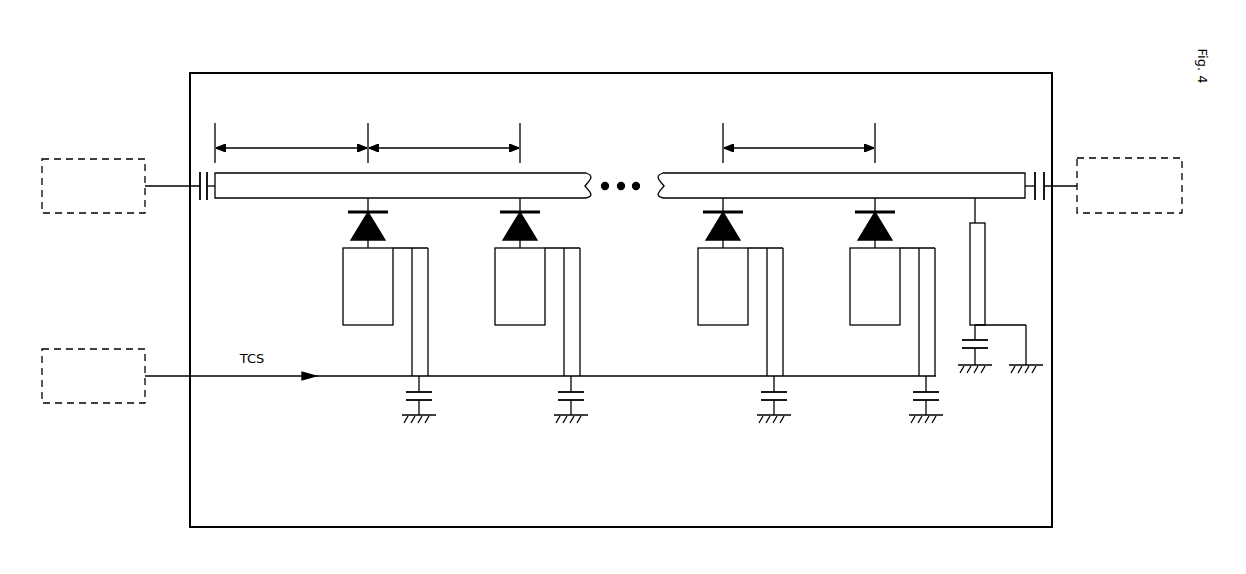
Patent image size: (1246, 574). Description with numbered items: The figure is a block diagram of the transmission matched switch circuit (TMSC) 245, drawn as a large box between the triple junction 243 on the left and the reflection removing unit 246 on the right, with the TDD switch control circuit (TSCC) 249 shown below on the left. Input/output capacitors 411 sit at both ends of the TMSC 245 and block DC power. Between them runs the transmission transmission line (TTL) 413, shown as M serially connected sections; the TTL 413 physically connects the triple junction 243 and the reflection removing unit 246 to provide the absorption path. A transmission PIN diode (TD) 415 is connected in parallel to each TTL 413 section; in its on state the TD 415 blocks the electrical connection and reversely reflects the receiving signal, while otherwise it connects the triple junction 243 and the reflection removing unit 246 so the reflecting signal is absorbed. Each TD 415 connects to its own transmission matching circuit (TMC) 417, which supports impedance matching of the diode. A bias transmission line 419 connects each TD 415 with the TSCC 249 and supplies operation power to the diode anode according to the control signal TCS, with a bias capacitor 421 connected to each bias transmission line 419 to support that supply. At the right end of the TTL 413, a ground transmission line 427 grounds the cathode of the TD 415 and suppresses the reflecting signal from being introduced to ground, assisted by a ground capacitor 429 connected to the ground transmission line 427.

The triple junction 243 is at (100, 157).
The transmission matched switch circuit (TMSC) 245 is at (733, 73).
The reflection removing unit 246 is at (1110, 157).
The TDD switch control circuit (TSCC) 249 is at (100, 347).
The input/output capacitor 411 is at (207, 200).
The transmission transmission line (TTL) 413 is at (442, 105).
The transmission PIN diode (TD) 415 is at (349, 213).
The transmission matching circuit (TMC) 417 is at (343, 315).
The bias transmission line 419 is at (430, 357).
The bias capacitor 421 is at (423, 385).
The ground transmission line 427 is at (986, 283).
The ground capacitor 429 is at (962, 335).